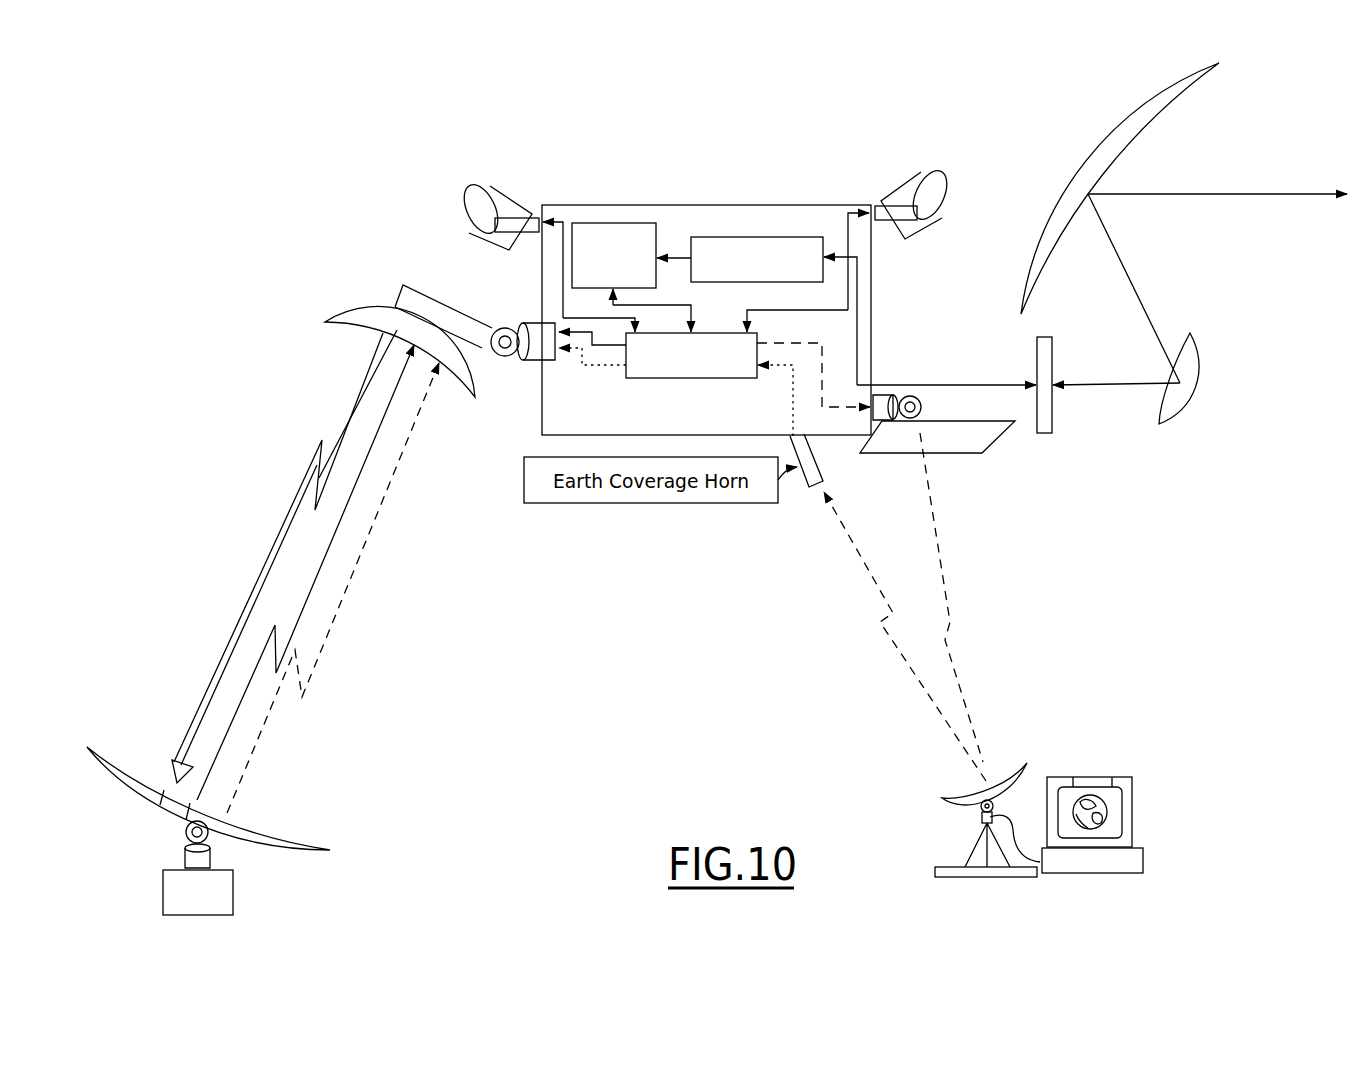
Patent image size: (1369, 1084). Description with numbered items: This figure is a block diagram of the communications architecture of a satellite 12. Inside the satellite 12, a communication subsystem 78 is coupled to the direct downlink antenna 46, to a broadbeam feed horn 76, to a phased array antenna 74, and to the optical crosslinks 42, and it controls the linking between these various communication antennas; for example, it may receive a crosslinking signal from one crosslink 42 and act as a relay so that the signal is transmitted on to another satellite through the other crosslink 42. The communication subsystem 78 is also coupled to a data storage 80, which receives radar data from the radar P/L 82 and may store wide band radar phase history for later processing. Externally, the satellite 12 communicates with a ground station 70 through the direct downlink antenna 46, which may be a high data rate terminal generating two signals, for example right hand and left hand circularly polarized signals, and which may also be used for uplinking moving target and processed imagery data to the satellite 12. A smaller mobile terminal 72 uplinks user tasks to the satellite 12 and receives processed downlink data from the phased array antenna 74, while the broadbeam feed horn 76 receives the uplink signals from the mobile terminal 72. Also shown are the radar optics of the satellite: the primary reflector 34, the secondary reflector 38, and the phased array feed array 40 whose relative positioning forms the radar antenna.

The satellite 12 is at (871, 278).
The primary reflector 34 is at (1100, 137).
The secondary reflector 38 is at (1200, 357).
The feed array 40 is at (1052, 345).
The optical crosslinks 42 is at (480, 211).
The direct downlink antenna 46 is at (379, 308).
The ground station 70 is at (233, 903).
The mobile terminal 72 is at (1143, 858).
The phased array antenna 74 is at (963, 453).
The broadbeam feed horn 76 is at (805, 487).
The communication subsystem 78 is at (641, 378).
The data storage 80 is at (622, 222).
The radar P/L 82 is at (752, 236).